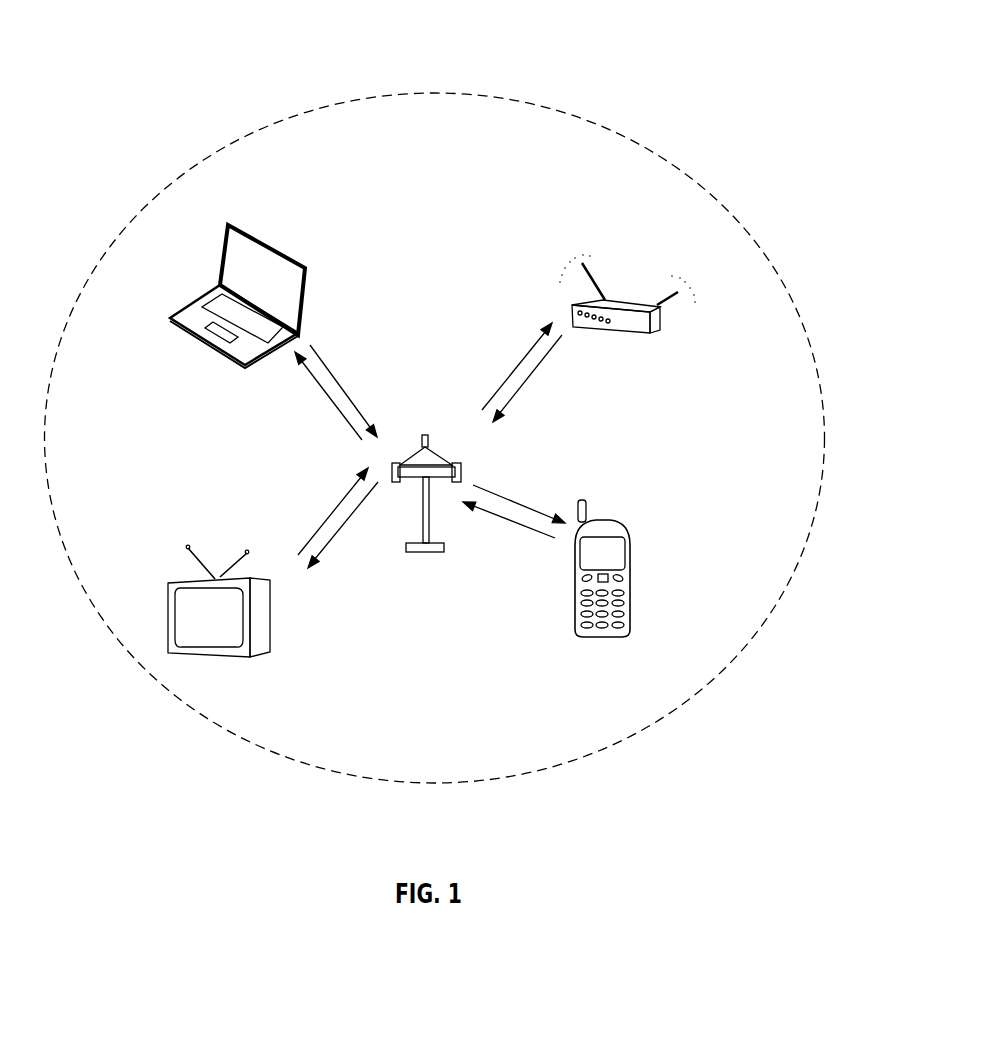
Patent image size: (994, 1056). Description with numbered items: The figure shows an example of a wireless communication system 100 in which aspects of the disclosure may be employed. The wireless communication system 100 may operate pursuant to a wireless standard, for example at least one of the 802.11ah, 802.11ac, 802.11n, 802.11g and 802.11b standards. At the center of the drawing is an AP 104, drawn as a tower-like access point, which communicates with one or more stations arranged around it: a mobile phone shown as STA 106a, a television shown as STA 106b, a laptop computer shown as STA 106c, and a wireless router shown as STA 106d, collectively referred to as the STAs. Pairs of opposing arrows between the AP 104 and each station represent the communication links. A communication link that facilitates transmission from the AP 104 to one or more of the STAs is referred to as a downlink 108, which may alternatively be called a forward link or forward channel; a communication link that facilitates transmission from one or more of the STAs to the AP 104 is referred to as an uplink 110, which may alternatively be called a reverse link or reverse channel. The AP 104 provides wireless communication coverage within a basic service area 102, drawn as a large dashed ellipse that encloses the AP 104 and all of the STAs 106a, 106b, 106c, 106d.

The wireless communication system 100 is at (722, 43).
The basic service area 102 is at (765, 248).
The AP 104 is at (426, 467).
The STA 106a is at (611, 553).
The STA 106b is at (227, 591).
The STA 106c is at (237, 273).
The STA 106d is at (627, 284).
The downlink 108 is at (507, 488).
The uplink 110 is at (465, 523).